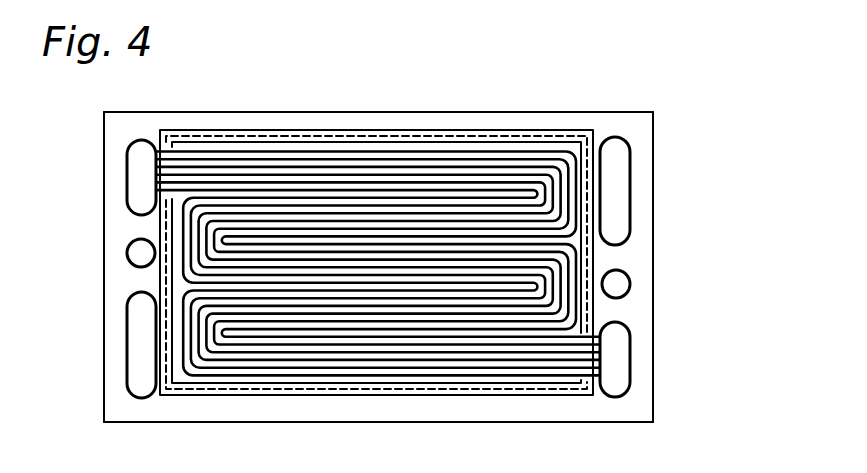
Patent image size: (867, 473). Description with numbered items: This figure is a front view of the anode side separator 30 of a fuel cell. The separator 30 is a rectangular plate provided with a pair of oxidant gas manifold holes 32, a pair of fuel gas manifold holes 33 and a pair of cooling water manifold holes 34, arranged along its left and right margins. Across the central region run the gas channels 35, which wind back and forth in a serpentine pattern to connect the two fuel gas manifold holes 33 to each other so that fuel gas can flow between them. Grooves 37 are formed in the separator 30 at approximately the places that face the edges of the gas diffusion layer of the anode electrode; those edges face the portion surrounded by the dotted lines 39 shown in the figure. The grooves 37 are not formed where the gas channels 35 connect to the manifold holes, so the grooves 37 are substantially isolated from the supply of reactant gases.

The anode side separator 30 is at (632, 122).
The oxidant gas manifold holes 32 is at (614, 194).
The fuel gas manifold holes 33 is at (143, 172).
The cooling water manifold holes 34 is at (139, 254).
The gas channels 35 is at (505, 155).
The grooves 37 is at (358, 134).
The dotted lines 39 is at (438, 395).